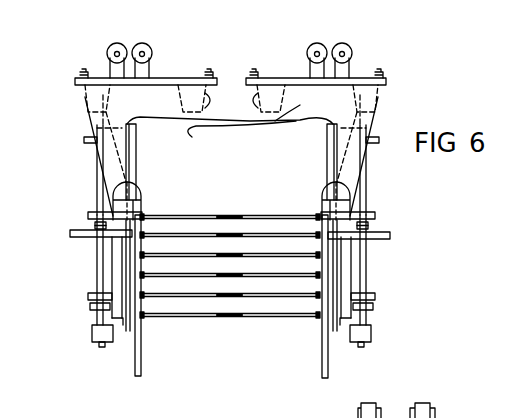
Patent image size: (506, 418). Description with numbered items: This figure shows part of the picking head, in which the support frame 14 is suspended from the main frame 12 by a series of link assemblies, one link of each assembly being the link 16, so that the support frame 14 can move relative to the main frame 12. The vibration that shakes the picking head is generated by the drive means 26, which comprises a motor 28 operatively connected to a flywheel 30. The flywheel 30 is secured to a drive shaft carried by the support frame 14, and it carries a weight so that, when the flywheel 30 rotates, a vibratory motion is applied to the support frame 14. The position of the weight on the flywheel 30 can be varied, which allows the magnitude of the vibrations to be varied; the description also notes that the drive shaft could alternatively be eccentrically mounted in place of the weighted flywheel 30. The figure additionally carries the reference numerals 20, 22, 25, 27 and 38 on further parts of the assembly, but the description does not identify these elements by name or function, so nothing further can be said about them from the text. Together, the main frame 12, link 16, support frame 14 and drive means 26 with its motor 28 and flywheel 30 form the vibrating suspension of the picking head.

The main frame 12 is at (10, 100).
The support frame 14 is at (227, 362).
The link 16 is at (208, 314).
The support columns 20 is at (126, 333).
The tube plates 22 is at (142, 365).
The flexible hose 25 is at (152, 107).
The drive means 26 is at (91, 238).
The lifting lugs 27 is at (132, 45).
The motor 28 is at (92, 333).
The flywheel 30 is at (97, 279).
The support plate 38 is at (75, 233).